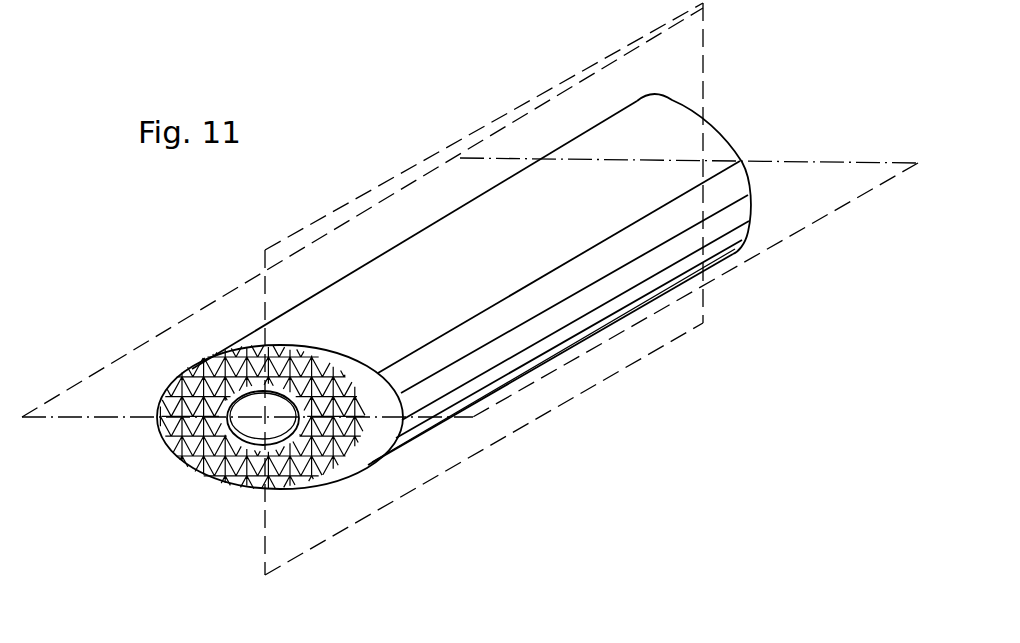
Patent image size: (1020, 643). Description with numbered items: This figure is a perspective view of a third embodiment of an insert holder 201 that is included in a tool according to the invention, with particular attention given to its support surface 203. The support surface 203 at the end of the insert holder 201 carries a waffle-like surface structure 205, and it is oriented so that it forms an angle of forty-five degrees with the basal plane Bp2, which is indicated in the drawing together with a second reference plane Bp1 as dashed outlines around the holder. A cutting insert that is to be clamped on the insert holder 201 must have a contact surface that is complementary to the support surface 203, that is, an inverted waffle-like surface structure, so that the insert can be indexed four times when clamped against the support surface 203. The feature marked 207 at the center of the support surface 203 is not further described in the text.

The insert holder 201 is at (463, 192).
The support surface 203 is at (222, 490).
The waffle-like surface structure 205 is at (185, 473).
The central bore 207 is at (252, 490).
The first reference plane Bp1 is at (790, 218).
The basal plane Bp2 is at (413, 465).